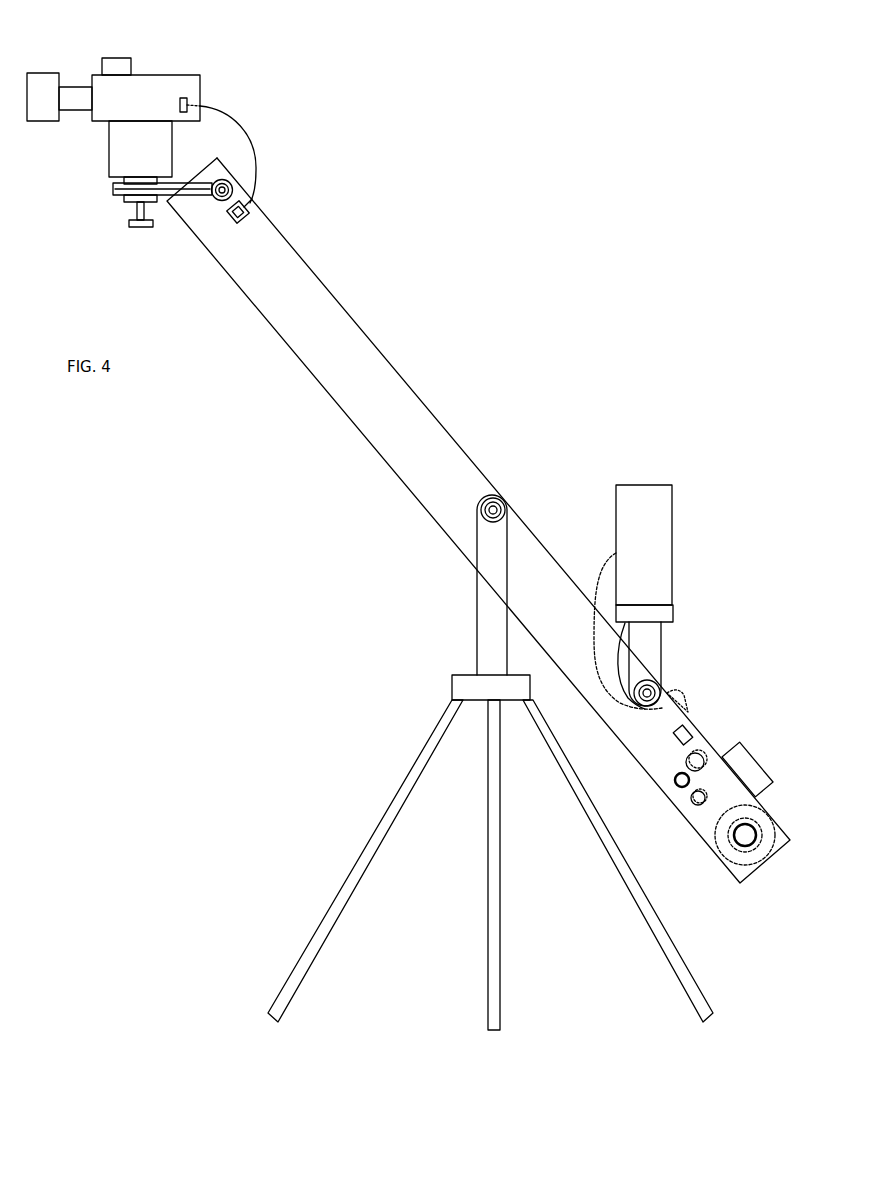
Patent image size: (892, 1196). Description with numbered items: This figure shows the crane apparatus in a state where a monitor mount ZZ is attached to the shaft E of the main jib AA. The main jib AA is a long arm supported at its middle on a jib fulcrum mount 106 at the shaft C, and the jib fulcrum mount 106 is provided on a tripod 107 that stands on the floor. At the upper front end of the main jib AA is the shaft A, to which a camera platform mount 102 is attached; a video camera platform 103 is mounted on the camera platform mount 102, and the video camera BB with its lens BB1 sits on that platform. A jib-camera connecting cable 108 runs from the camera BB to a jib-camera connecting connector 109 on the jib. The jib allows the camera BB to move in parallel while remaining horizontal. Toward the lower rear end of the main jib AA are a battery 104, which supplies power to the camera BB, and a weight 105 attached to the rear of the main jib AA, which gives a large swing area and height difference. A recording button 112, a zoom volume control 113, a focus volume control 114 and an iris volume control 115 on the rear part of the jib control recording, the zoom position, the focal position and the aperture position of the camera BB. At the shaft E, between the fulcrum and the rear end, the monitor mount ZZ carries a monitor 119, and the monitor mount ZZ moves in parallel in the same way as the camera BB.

The lens BB1 is at (50, 78).
The video camera BB is at (158, 73).
The video camera platform 103 is at (118, 146).
The camera platform mount 102 is at (113, 188).
The shaft A is at (214, 179).
The jib-camera connecting cable 108 is at (243, 130).
The jib-camera connecting connector 109 is at (253, 202).
The main jib AA is at (332, 297).
The shaft C is at (486, 497).
The jib fulcrum mount 106 is at (478, 614).
The tripod 107 is at (405, 778).
The monitor 119 is at (665, 545).
The monitor mount ZZ is at (667, 613).
The shaft E is at (645, 680).
The recording button 112 is at (700, 725).
The battery 104 is at (752, 758).
The zoom volume control 113 is at (685, 758).
The focus volume control 114 is at (678, 787).
The iris volume control 115 is at (698, 807).
The weight 105 is at (752, 850).